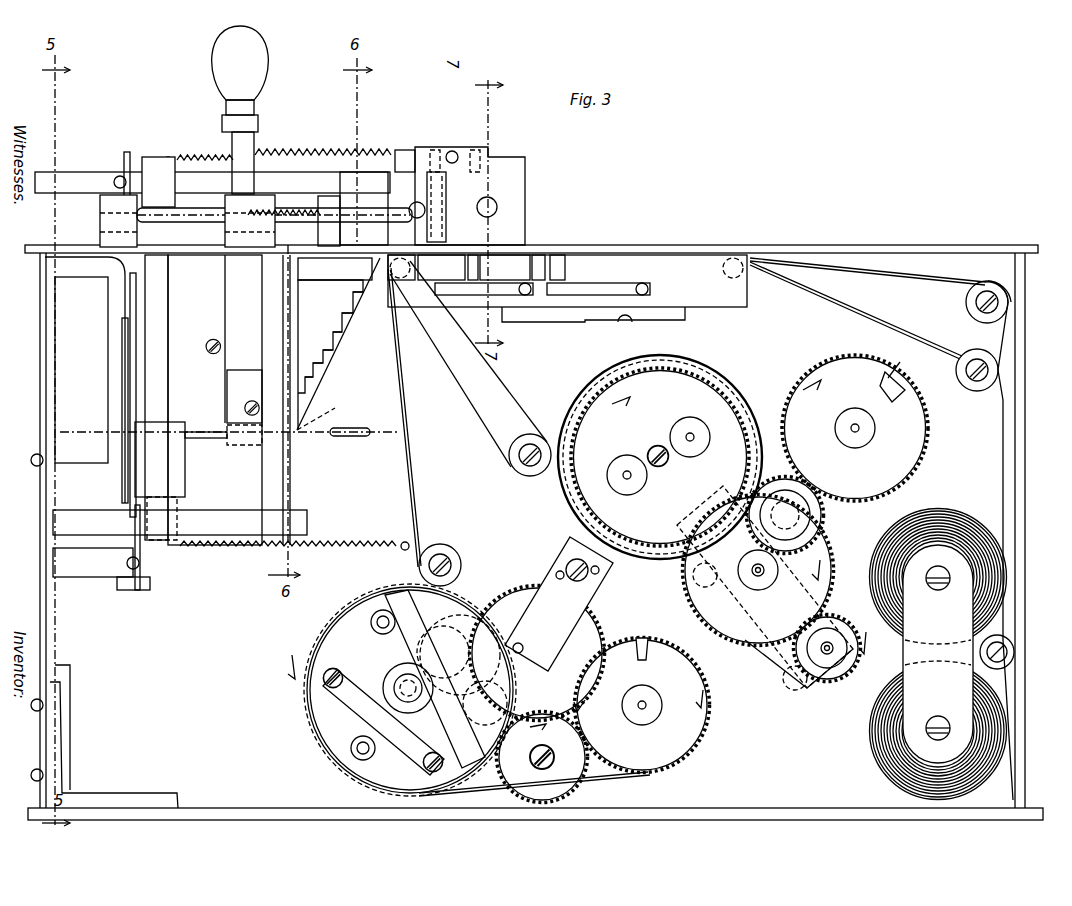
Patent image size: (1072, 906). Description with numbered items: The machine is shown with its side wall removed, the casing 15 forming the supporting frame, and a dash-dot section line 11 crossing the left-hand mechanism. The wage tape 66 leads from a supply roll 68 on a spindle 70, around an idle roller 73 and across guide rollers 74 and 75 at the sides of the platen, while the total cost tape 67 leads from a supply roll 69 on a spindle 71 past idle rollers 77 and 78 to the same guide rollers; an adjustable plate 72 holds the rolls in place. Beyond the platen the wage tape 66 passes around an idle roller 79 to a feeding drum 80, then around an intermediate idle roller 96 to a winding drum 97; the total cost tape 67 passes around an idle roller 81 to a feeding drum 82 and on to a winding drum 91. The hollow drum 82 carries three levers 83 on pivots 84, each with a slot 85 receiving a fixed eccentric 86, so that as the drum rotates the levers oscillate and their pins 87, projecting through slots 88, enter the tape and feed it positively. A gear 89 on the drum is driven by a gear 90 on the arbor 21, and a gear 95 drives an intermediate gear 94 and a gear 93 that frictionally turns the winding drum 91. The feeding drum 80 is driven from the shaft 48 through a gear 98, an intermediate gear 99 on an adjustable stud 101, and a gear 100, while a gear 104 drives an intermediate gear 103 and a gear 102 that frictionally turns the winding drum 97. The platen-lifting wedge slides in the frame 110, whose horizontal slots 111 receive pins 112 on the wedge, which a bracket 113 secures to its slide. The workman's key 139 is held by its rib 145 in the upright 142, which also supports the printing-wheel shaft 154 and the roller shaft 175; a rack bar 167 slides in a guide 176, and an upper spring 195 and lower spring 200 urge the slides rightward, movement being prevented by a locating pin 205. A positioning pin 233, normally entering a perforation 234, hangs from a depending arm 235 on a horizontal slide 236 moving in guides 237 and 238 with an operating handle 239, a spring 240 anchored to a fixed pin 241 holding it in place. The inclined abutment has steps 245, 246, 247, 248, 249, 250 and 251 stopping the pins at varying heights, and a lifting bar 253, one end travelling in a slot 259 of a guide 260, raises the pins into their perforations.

The shaft 11 is at (233, 436).
The casing 15 is at (588, 246).
The arbor 21 is at (520, 644).
The shaft 48 is at (828, 660).
The wage tape 66 is at (828, 296).
The total cost tape 67 is at (872, 268).
The supply roll 68 is at (924, 510).
The supply roll 69 is at (872, 755).
The spindle 70 is at (940, 566).
The spindle 71 is at (942, 714).
The adjustable plate 72 is at (903, 656).
The idle roller 73 is at (975, 384).
The guide roller 74 is at (742, 290).
The guide roller 75 is at (395, 300).
The idle roller 77 is at (1010, 646).
The idle roller 78 is at (1009, 300).
The idle roller 79 is at (530, 432).
The feeding drum 80 is at (698, 372).
The idle roller 81 is at (438, 542).
The feeding drum 82 is at (316, 642).
The lever 83 is at (334, 690).
The pivot 84 is at (371, 626).
The slot 85 is at (394, 688).
The eccentric 86 is at (396, 700).
The pin 87 is at (478, 606).
The slot 88 is at (314, 712).
The gear 89 is at (440, 626).
The gear 90 is at (524, 596).
The winding drum 91 is at (686, 748).
The gear 93 is at (644, 650).
The intermediate gear 94 is at (582, 783).
The gear 95 is at (492, 788).
The intermediate idle roller 96 is at (808, 516).
The winding drum 97 is at (848, 368).
The gear 98 is at (836, 616).
The intermediate gear 99 is at (818, 552).
The gear 100 is at (662, 523).
The adjustable stud 101 is at (756, 572).
The gear 102 is at (895, 372).
The intermediate gear 103 is at (790, 478).
The gear 104 is at (738, 398).
The frame 110 is at (463, 296).
The horizontal slot 111 is at (447, 296).
The pin 112 is at (527, 296).
The bracket 113 is at (646, 310).
The key 139 is at (446, 212).
The upright 142 is at (515, 172).
The rib 145 is at (412, 203).
The shaft 154 is at (496, 204).
The rack bar 167 is at (210, 176).
The shaft 175 is at (456, 152).
The guide 176 is at (118, 176).
The spring 195 is at (298, 146).
The spring 200 is at (322, 541).
The locating pin 205 is at (212, 440).
The positioning pin 233 is at (340, 430).
The perforation 234 is at (333, 413).
The depending arm 235 is at (230, 327).
The horizontal slide 236 is at (213, 222).
The guide 237 is at (100, 211).
The guide 238 is at (338, 190).
The operating handle 239 is at (262, 64).
The spring 240 is at (272, 200).
The fixed pin 241 is at (335, 269).
The step 245 is at (312, 380).
The step 246 is at (320, 366).
The step 247 is at (330, 352).
The step 248 is at (333, 332).
The step 249 is at (336, 326).
The step 250 is at (345, 310).
The step 251 is at (353, 290).
The lifting bar 253 is at (125, 492).
The slot 259 is at (122, 391).
The guide 260 is at (108, 358).